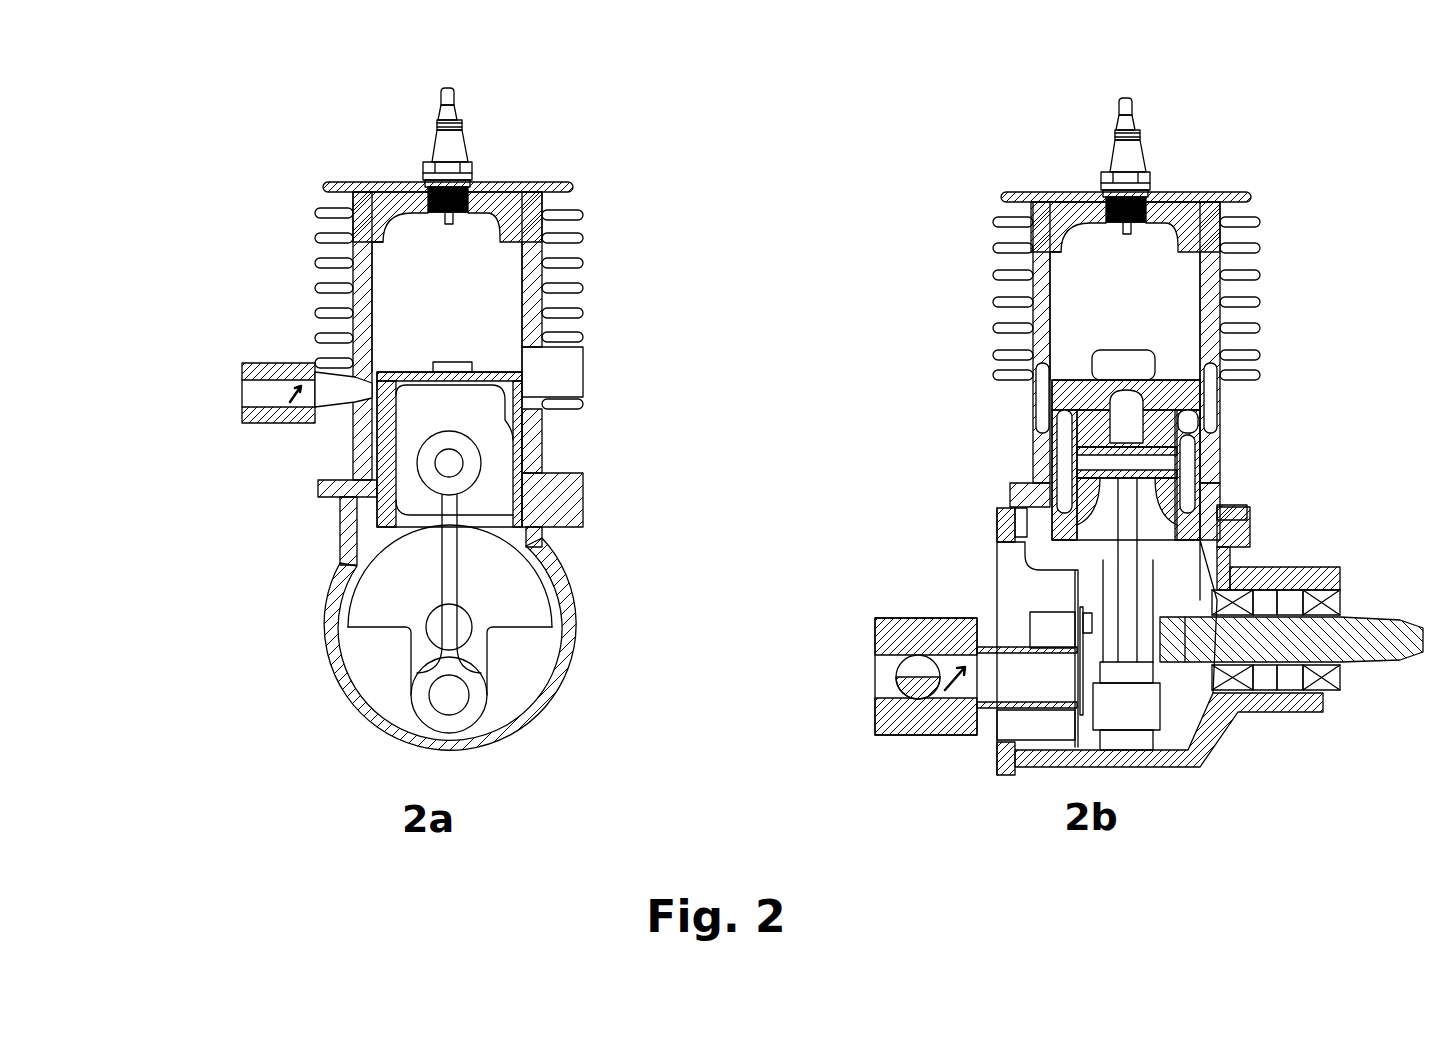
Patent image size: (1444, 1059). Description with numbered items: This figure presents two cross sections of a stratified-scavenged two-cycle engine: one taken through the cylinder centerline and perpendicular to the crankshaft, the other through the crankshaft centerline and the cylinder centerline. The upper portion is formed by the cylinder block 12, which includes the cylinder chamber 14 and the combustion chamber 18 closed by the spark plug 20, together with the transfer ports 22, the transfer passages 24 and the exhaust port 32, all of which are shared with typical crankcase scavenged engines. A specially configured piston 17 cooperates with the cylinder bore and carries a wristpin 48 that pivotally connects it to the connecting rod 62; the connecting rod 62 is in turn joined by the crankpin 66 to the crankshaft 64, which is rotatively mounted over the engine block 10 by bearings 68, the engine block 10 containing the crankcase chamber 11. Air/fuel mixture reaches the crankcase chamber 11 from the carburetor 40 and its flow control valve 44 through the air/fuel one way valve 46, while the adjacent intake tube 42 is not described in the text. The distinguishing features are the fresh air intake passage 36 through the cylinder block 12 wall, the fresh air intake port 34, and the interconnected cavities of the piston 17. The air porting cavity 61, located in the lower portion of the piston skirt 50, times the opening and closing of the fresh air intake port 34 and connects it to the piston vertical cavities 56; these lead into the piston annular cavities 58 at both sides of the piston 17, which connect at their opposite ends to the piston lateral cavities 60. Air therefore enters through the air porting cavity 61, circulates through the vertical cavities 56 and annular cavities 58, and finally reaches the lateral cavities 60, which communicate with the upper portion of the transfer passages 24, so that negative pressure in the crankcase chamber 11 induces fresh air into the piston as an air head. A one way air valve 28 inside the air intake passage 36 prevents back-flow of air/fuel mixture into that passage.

The engine block 10 is at (335, 657).
The crankcase chamber 11 is at (368, 647).
The cylinder block 12 is at (420, 280).
The cylinder chamber 14 is at (390, 217).
The piston 17 is at (573, 370).
The combustion chamber 18 is at (467, 228).
The spark plug 20 is at (450, 148).
The transfer ports 22 is at (460, 363).
The transfer passages 24 is at (1230, 380).
The one way air valve 28 is at (290, 393).
The exhaust port 32 is at (527, 360).
The fresh air intake port 34 is at (363, 382).
The fresh air intake passage 36 is at (255, 397).
The carburetor 40 is at (913, 633).
The intake passage 42 is at (1008, 683).
The flow control valve 44 is at (948, 695).
The air/fuel one way valve 46 is at (1077, 673).
The wristpin 48 is at (447, 463).
The piston skirt 50 is at (522, 427).
The piston vertical cavities 56 is at (383, 440).
The piston annular cavities 58 is at (1188, 420).
The piston lateral cavities 60 is at (1062, 470).
The air porting cavity 61 is at (383, 503).
The connecting rod 62 is at (448, 572).
The crankshaft 64 is at (508, 598).
The crankpin 66 is at (457, 695).
The bearings 68 is at (1320, 583).